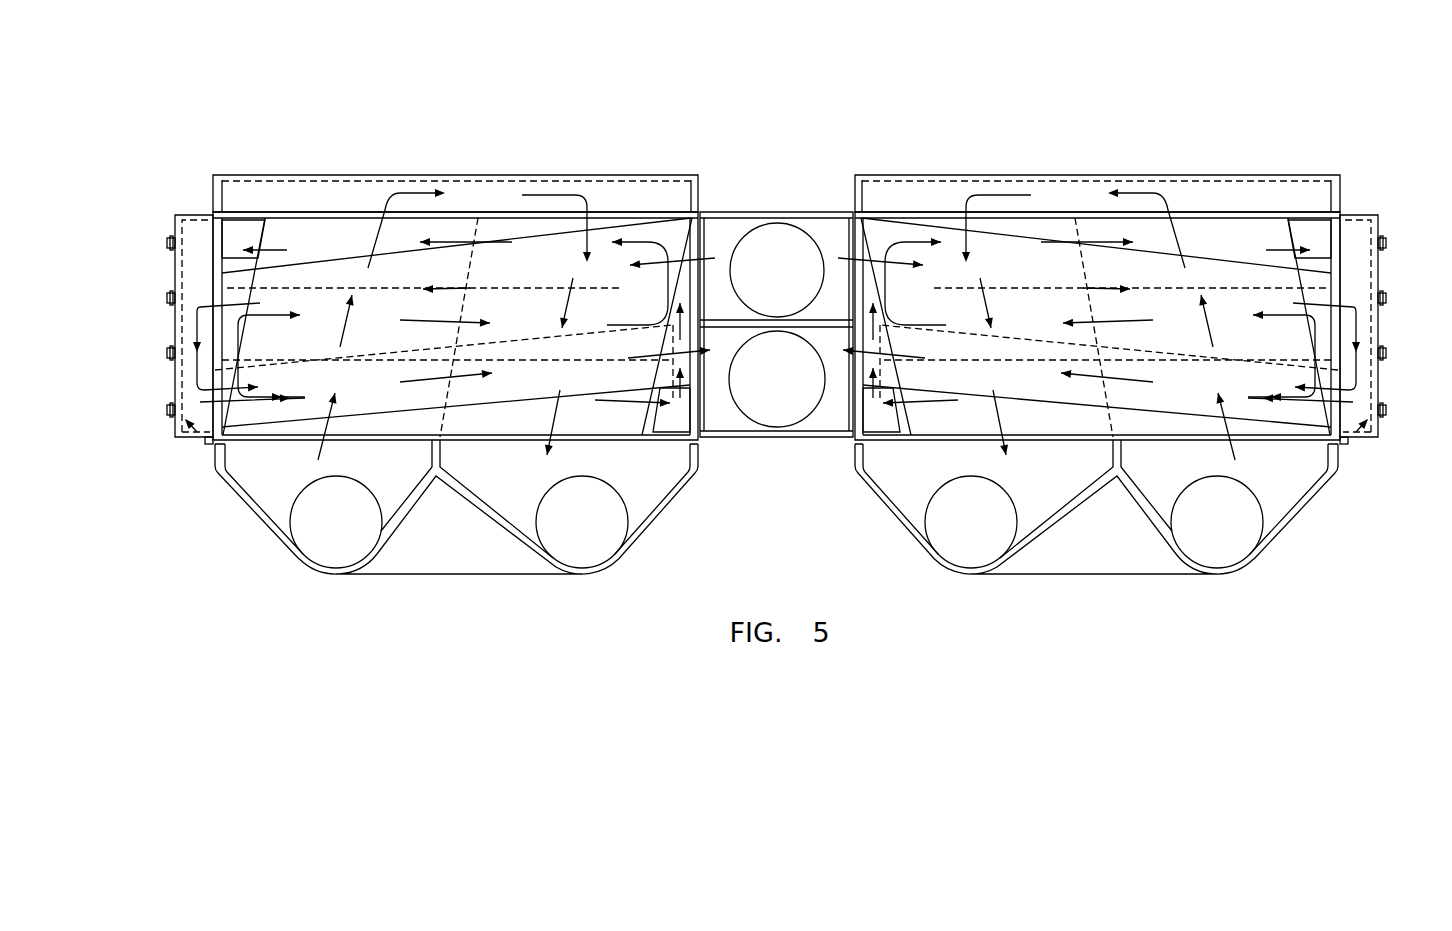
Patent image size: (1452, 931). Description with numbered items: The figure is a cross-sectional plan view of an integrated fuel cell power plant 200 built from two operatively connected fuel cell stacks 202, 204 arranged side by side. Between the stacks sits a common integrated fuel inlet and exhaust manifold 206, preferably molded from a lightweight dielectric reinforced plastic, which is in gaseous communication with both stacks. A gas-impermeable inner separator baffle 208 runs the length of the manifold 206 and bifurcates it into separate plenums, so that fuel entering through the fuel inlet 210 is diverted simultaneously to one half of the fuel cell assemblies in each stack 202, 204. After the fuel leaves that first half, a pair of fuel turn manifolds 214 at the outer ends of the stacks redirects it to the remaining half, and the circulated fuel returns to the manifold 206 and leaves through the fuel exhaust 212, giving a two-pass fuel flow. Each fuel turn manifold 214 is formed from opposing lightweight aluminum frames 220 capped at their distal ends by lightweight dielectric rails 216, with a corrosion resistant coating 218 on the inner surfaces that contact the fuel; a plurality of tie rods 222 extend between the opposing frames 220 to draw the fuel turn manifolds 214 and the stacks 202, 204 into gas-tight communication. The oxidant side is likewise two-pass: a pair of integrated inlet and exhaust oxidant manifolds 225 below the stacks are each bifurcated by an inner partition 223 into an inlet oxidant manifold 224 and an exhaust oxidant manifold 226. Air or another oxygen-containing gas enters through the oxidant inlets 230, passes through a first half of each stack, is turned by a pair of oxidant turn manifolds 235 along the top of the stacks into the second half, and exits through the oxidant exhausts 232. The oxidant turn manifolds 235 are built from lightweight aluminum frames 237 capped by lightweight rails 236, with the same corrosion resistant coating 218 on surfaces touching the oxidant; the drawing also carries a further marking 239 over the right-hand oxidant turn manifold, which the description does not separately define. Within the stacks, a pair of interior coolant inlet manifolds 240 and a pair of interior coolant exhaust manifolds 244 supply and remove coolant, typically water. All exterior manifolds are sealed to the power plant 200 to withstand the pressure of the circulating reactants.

The fuel cell power plant 200 is at (258, 122).
The fuel cell stack 202 is at (667, 230).
The fuel cell stack 204 is at (887, 235).
The integrated fuel inlet and exhaust manifold 206 is at (763, 210).
The inner separator baffle 208 is at (722, 318).
The fuel inlet 210 is at (777, 238).
The fuel exhaust 212 is at (775, 408).
The fuel turn manifold 214 is at (187, 202).
The lightweight rail 216 is at (196, 276).
The corrosion resistant coating 218 is at (348, 184).
The lightweight aluminum frame 220 is at (175, 312).
The tie rod 222 is at (175, 241).
The inner partition 223 is at (438, 456).
The inlet oxidant manifold 224 is at (250, 470).
The integrated inlet and exhaust oxidant manifold 225 is at (456, 588).
The exhaust oxidant manifold 226 is at (643, 490).
The oxidant inlet 230 is at (336, 545).
The oxidant exhaust 232 is at (588, 547).
The oxidant turn manifold 235 is at (388, 160).
The lightweight rail 236 is at (489, 190).
The lightweight aluminum frame 237 is at (586, 178).
The air flow path 239 is at (969, 183).
The interior coolant inlet manifold 240 is at (686, 424).
The interior coolant exhaust manifold 244 is at (242, 232).